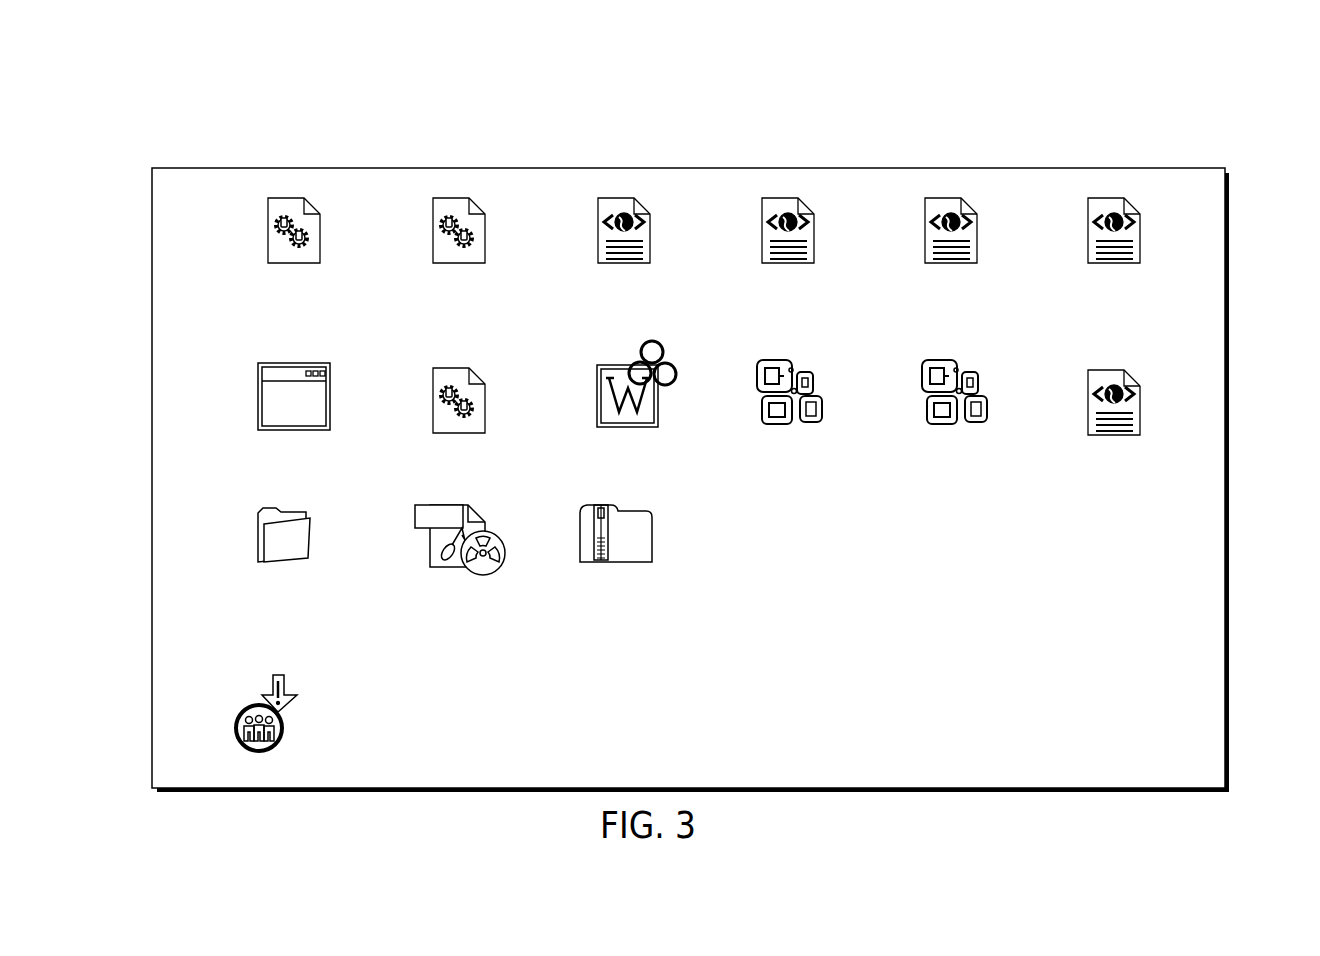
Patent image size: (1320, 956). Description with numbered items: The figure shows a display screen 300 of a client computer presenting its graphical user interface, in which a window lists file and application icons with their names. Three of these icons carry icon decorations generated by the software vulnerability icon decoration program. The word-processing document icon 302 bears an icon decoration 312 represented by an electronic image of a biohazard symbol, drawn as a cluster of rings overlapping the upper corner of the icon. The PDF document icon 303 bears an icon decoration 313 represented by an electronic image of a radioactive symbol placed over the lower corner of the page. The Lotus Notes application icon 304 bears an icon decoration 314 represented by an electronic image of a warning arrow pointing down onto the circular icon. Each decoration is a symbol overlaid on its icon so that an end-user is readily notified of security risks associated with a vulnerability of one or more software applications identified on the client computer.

The display screen 300 is at (1176, 111).
The icon 302 is at (597, 378).
The icon decoration 312 is at (661, 343).
The icon 303 is at (437, 543).
The icon decoration 313 is at (499, 544).
The icon 304 is at (240, 716).
The icon decoration 314 is at (284, 682).